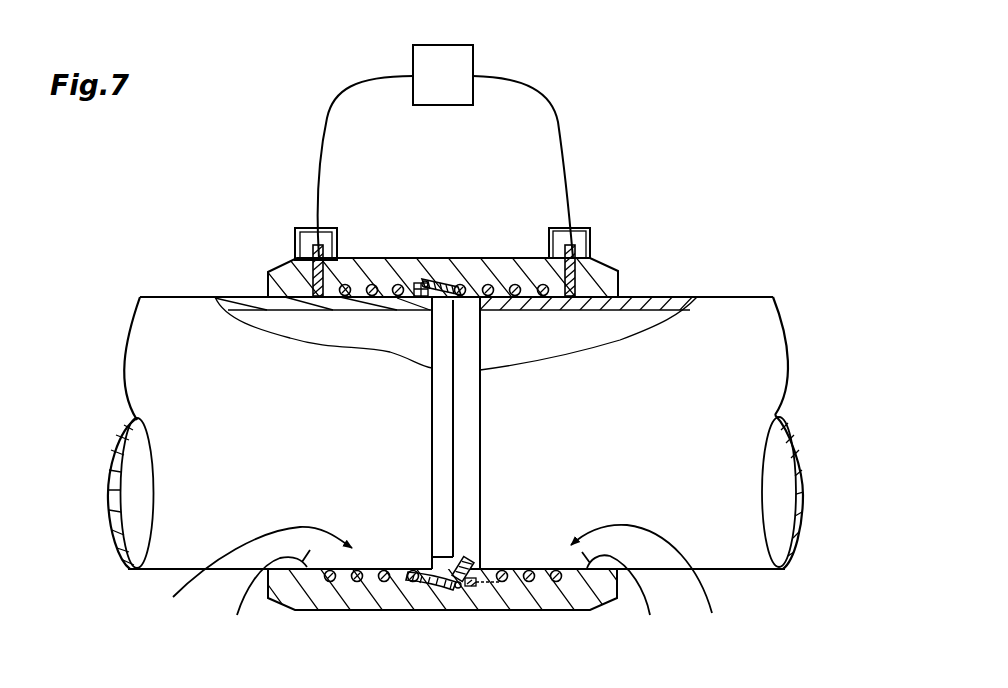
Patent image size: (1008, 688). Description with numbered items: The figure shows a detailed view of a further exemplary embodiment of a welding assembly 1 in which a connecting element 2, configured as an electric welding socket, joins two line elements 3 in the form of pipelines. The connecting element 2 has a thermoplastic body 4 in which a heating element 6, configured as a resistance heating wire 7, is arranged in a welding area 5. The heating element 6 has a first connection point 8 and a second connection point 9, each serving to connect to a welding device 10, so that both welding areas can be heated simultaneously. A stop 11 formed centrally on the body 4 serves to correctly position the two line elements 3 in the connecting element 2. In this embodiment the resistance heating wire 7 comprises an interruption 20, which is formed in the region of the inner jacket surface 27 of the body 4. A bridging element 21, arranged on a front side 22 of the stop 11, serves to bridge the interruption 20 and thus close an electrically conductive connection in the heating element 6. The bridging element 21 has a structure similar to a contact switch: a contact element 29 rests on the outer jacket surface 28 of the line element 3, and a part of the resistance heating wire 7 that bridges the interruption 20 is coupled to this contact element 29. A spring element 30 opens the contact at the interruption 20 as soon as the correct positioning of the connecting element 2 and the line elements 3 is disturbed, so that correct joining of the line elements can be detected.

The welding assembly 1 is at (812, 96).
The connecting element 2 is at (418, 197).
The line element 3 is at (146, 278).
The thermoplastic body 4 is at (590, 270).
The welding area 5 is at (439, 588).
The heating element 6 is at (572, 590).
The resistance heating wire 7 is at (440, 291).
The first connection point 8 is at (580, 214).
The second connection point 9 is at (290, 217).
The welding device 10 is at (443, 75).
The stop 11 is at (432, 330).
The interruption 20 is at (458, 598).
The bridging element 21 is at (438, 252).
The front side 22 is at (461, 397).
The inner jacket surface 27 is at (449, 603).
The outer jacket surface 28 is at (158, 579).
The contact element 29 is at (420, 290).
The spring element 30 is at (428, 287).